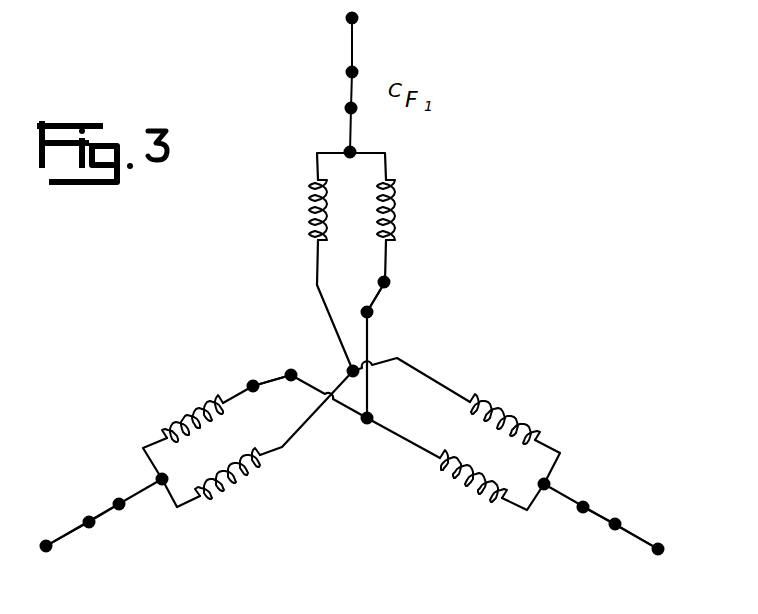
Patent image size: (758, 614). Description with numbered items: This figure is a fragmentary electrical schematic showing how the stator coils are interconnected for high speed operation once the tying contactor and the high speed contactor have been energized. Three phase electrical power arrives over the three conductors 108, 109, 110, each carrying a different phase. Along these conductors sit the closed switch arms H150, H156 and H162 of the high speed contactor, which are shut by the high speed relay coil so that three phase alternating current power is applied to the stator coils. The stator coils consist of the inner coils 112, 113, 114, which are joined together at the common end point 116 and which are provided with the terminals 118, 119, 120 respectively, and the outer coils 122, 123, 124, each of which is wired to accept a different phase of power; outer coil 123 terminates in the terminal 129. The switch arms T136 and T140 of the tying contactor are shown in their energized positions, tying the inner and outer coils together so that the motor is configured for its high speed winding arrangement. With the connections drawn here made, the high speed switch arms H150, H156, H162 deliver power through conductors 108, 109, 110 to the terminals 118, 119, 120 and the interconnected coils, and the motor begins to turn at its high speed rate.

The conductor 108 is at (350, 49).
The conductor 109 is at (65, 541).
The conductor 110 is at (647, 545).
The inner coil 112 is at (309, 210).
The inner coil 113 is at (503, 407).
The inner coil 114 is at (246, 483).
The common end point 116 is at (347, 369).
The terminal 118 is at (357, 151).
The terminal 119 is at (549, 481).
The terminal 120 is at (158, 479).
The outer coil 122 is at (396, 212).
The outer coil 123 is at (468, 488).
The outer coil 124 is at (213, 404).
The terminal 129 is at (367, 423).
The switch arm H150 is at (351, 104).
The switch arm H156 is at (108, 512).
The switch arm H162 is at (610, 513).
The switch arm T136 is at (379, 292).
The switch arm T140 is at (281, 353).